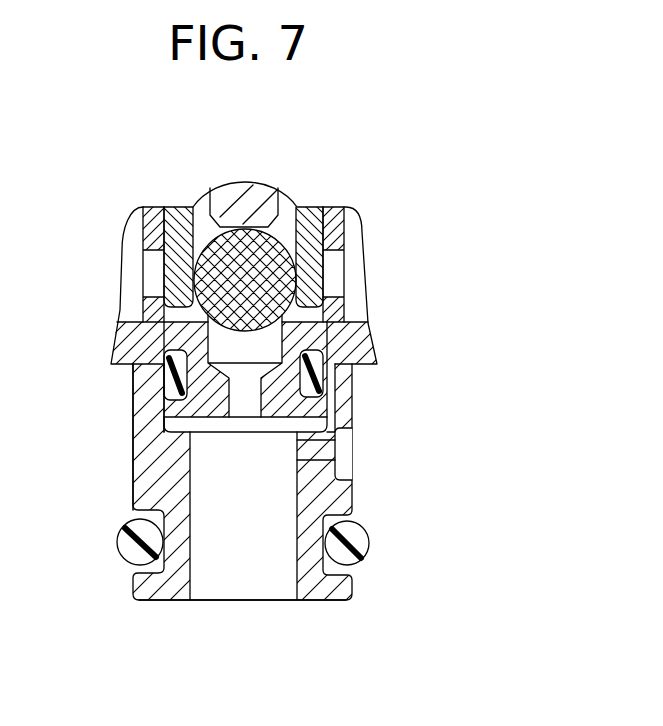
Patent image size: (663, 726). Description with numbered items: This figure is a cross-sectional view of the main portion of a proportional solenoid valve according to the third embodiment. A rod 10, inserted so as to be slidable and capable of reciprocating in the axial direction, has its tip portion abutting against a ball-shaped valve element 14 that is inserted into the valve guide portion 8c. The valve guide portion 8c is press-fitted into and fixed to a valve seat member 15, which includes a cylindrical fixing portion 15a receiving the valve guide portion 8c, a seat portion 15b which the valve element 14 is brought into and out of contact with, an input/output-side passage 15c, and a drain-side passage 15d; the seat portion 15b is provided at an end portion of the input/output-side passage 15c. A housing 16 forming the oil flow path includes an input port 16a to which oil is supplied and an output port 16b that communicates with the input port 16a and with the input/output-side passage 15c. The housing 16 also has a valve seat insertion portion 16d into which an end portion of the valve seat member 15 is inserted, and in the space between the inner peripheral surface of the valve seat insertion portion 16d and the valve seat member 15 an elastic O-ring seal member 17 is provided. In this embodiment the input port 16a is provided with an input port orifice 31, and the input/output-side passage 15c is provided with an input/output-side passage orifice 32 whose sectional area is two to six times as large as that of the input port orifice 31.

The rod 10 is at (262, 216).
The valve element 14 is at (292, 226).
The valve guide portion 8c is at (313, 218).
The valve seat member 15 is at (353, 280).
The cylindrical fixing portion 15a is at (335, 230).
The seat portion 15b is at (290, 314).
The input/output-side passage 15c is at (218, 337).
The drain-side passage 15d is at (143, 263).
The seal member 17 is at (150, 388).
The housing 16 is at (340, 603).
The input port 16a is at (345, 443).
The output port 16b is at (250, 580).
The valve seat insertion portion 16d is at (132, 435).
The input port orifice 31 is at (317, 453).
The input/output-side passage orifice 32 is at (128, 512).